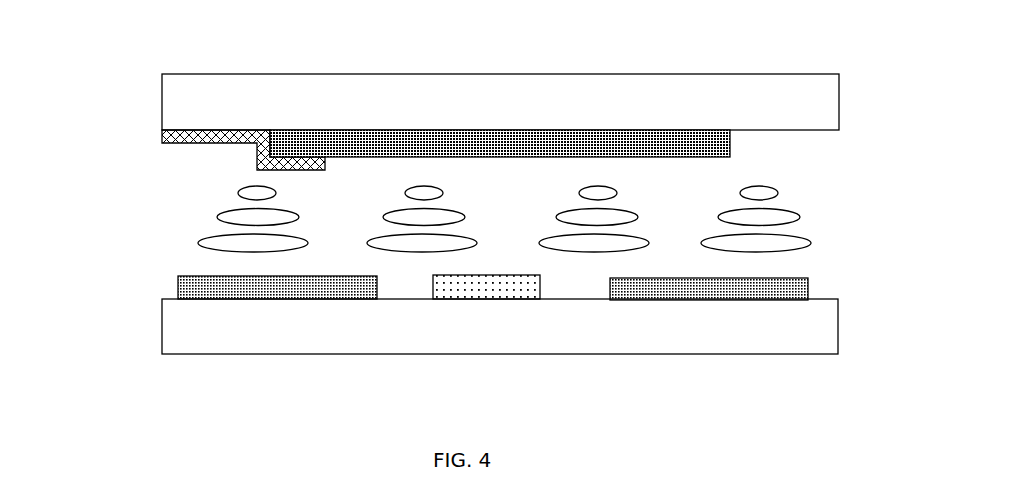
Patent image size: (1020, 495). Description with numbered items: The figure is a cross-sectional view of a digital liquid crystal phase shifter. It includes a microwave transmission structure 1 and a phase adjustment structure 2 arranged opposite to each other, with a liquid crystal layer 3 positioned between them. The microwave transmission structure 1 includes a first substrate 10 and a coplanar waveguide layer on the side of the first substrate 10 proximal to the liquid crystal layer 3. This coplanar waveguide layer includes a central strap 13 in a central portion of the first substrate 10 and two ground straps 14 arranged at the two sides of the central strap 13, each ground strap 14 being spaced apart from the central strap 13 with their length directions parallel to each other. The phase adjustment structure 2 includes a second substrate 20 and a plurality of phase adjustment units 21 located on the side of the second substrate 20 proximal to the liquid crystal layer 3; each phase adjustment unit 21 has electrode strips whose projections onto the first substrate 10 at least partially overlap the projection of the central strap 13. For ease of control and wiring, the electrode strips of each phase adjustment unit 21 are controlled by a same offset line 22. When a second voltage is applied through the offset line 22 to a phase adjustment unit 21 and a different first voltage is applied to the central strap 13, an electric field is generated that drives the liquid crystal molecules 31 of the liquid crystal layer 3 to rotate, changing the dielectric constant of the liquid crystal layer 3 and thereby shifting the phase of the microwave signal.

The microwave transmission structure 1 is at (855, 273).
The phase adjustment structure 2 is at (853, 74).
The liquid crystal layer 3 is at (193, 218).
The first substrate 10 is at (193, 327).
The central strap 13 is at (483, 288).
The ground straps 14 is at (270, 290).
The second substrate 20 is at (382, 96).
The phase adjustment unit 21 is at (437, 142).
The offset line 22 is at (190, 134).
The liquid crystal molecules 31 is at (275, 213).